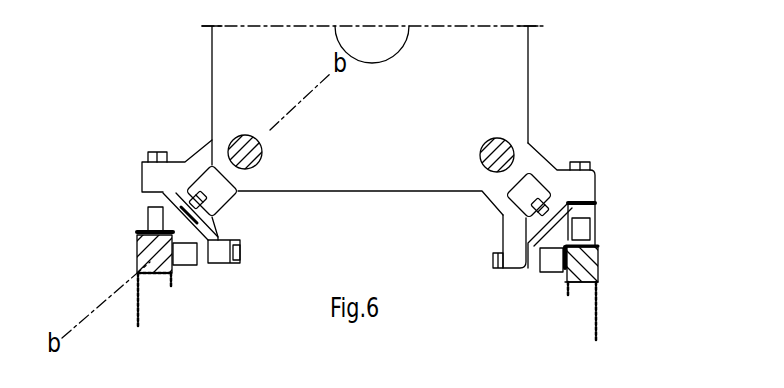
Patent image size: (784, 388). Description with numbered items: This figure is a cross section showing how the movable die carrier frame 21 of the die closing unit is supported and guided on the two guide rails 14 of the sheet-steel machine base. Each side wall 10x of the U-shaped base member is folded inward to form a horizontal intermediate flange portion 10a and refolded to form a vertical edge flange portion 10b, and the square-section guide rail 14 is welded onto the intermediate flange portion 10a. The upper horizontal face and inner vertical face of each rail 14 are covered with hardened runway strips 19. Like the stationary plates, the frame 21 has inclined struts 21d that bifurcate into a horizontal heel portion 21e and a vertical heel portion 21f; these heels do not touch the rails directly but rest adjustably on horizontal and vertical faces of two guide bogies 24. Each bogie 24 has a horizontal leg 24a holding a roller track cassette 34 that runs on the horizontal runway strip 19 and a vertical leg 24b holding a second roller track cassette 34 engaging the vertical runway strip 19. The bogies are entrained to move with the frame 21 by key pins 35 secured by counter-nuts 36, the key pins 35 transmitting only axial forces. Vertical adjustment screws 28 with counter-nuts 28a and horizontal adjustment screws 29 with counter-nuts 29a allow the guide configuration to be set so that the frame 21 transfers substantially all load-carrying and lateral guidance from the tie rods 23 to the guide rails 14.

The movable die carrier frame 21 is at (531, 56).
The inclined struts 21d is at (190, 162).
The horizontal heel portion 21e is at (141, 162).
The vertical heel portion 21f is at (222, 256).
The tie rods 23 is at (508, 142).
The guide bogies 24 is at (139, 197).
The horizontal leg 24a is at (148, 211).
The vertical leg 24b is at (190, 268).
The vertical adjustment screws 28 is at (598, 196).
The counter-nuts 28a is at (590, 162).
The horizontal adjustment screws 29 is at (534, 265).
The counter-nuts 29a is at (492, 262).
The roller track cassette 34 is at (138, 237).
The key pins 35 is at (225, 214).
The counter-nuts 36 is at (220, 176).
The runway strips 19 is at (600, 245).
The guide rails 14 is at (589, 262).
The intermediate flange portions 10a is at (582, 285).
The edge flange portions 10b is at (566, 290).
The side walls 10x is at (598, 317).